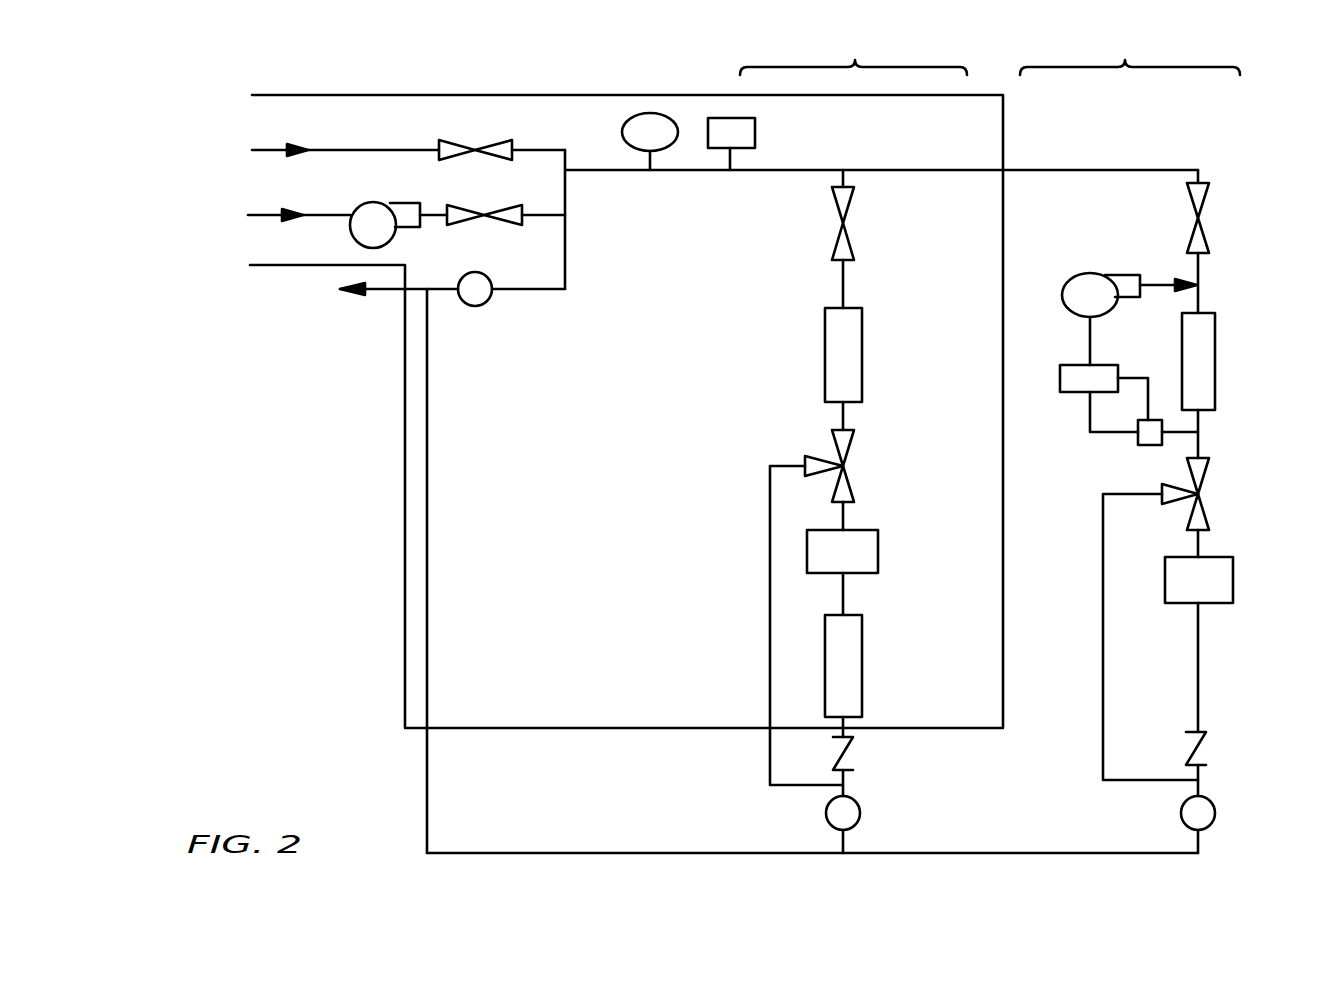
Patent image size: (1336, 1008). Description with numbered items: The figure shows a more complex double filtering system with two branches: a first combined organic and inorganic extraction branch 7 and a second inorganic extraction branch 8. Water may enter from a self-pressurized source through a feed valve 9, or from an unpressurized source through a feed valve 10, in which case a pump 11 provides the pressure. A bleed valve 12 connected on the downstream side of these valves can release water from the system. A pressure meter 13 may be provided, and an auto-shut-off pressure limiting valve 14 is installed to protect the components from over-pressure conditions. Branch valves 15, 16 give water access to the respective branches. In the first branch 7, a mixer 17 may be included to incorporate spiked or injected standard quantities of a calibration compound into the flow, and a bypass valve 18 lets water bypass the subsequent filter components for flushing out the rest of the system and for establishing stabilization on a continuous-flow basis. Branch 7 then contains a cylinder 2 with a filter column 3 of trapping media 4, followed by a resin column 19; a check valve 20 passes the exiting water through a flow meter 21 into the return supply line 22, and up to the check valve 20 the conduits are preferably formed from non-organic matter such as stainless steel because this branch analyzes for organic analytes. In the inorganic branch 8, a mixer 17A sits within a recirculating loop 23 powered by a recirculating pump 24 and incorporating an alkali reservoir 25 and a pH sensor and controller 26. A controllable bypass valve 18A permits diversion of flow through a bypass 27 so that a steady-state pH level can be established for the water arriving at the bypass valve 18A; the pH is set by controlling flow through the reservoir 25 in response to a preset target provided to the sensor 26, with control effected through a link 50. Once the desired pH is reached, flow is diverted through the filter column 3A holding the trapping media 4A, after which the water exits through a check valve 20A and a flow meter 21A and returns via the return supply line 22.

The cylinder 2 is at (865, 548).
The filter column 3 is at (865, 538).
The trapping media 4 is at (866, 546).
The first combined organic and inorganic extraction branch 7 is at (853, 53).
The second inorganic extraction branch 8 is at (1130, 53).
The feed valve 9 is at (480, 148).
The feed valve 10 is at (486, 212).
The pump 11 is at (384, 205).
The bleed valve 12 is at (490, 275).
The pressure meter 13 is at (622, 132).
The auto-shut-off pressure limiting valve 14 is at (755, 126).
The branch valve 15 is at (848, 222).
The branch valve 16 is at (1205, 226).
The mixer 17 is at (862, 323).
The mixer 17A is at (1215, 350).
The bypass valve 18 is at (836, 459).
The controllable bypass valve 18A is at (1205, 487).
The resin column 19 is at (848, 648).
The check valve 20 is at (850, 757).
The check valve 20A is at (1208, 765).
The flow meter 21 is at (862, 812).
The flow meter 21A is at (1216, 812).
The return supply line 22 is at (634, 855).
The recirculating loop 23 is at (1088, 425).
The recirculating pump 24 is at (1090, 272).
The alkali reservoir 25 is at (1078, 395).
The pH sensor and controller 26 is at (1146, 447).
The bypass 27 is at (1100, 570).
The filter column 3A is at (1227, 578).
The trapping media 4A is at (1216, 588).
The link 50 is at (1148, 378).